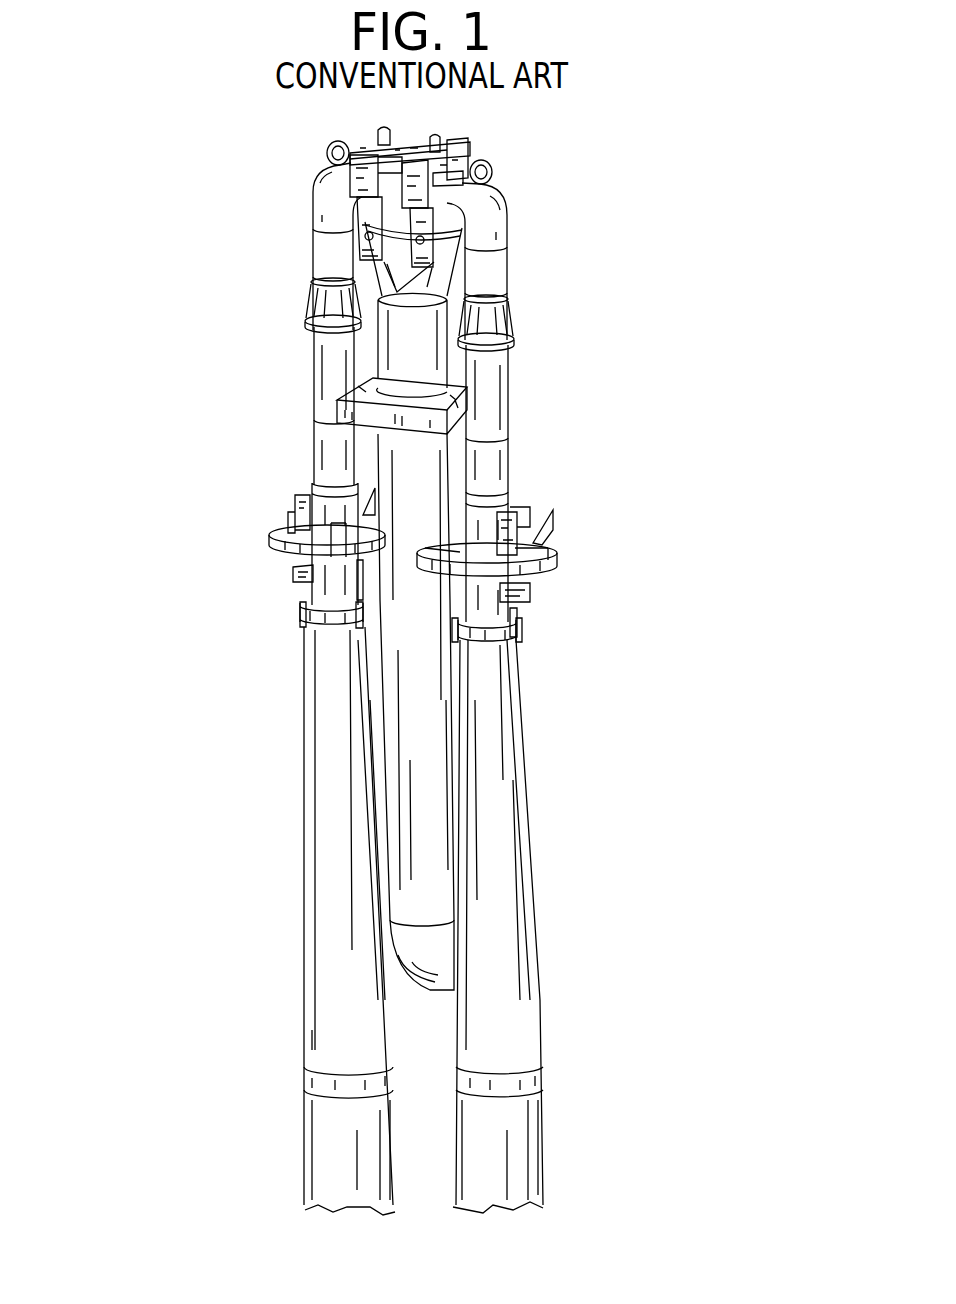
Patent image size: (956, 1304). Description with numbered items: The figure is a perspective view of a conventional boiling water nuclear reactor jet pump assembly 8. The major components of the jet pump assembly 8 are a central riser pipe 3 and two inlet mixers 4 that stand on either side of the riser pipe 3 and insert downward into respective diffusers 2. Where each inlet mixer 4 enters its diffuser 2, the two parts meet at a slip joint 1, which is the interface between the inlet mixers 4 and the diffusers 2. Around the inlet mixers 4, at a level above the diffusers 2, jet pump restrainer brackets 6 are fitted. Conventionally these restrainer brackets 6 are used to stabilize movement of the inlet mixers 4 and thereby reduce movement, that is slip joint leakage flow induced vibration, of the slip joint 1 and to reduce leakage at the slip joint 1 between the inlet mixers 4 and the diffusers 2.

The jet pump assembly 8 is at (184, 189).
The slip joint 1 is at (495, 628).
The diffuser 2 is at (498, 743).
The riser pipe 3 is at (410, 722).
The inlet mixer 4 is at (490, 405).
The jet pump restrainer bracket 6 is at (563, 493).